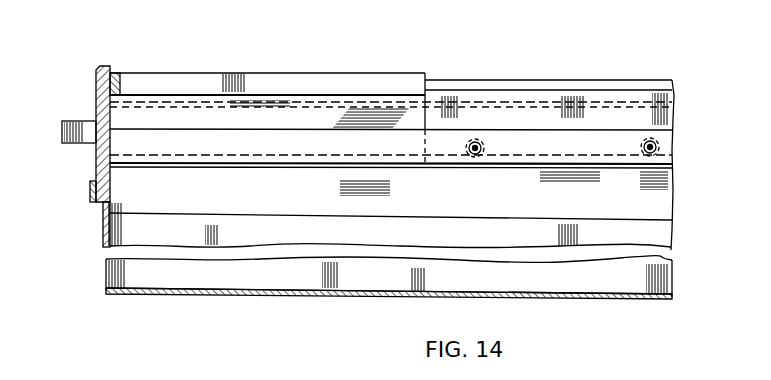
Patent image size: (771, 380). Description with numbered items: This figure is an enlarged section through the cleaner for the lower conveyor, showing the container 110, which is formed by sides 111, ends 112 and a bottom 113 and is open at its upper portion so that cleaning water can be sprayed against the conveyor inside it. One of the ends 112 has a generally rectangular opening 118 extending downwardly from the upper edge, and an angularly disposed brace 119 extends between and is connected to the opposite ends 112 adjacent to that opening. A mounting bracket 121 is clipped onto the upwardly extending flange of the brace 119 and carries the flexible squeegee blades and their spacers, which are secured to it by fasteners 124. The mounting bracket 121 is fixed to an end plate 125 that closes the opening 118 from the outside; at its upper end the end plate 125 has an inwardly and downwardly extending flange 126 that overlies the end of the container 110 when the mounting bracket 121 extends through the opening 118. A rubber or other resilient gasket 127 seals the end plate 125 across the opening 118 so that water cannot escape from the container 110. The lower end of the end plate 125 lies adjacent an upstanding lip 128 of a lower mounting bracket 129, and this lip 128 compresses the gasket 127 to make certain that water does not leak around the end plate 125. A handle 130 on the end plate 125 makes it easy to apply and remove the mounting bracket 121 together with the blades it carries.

The container 110 is at (231, 297).
The side 111 is at (658, 238).
The end 112 is at (108, 243).
The bottom 113 is at (318, 296).
The opening 118 is at (96, 88).
The brace 119 is at (145, 203).
The mounting bracket 121 is at (328, 103).
The fastener 124 is at (475, 157).
The end plate 125 is at (96, 170).
The flange 126 is at (118, 78).
The gasket 127 is at (96, 104).
The lip 128 is at (90, 194).
The mounting bracket 129 is at (105, 207).
The handle 130 is at (62, 135).